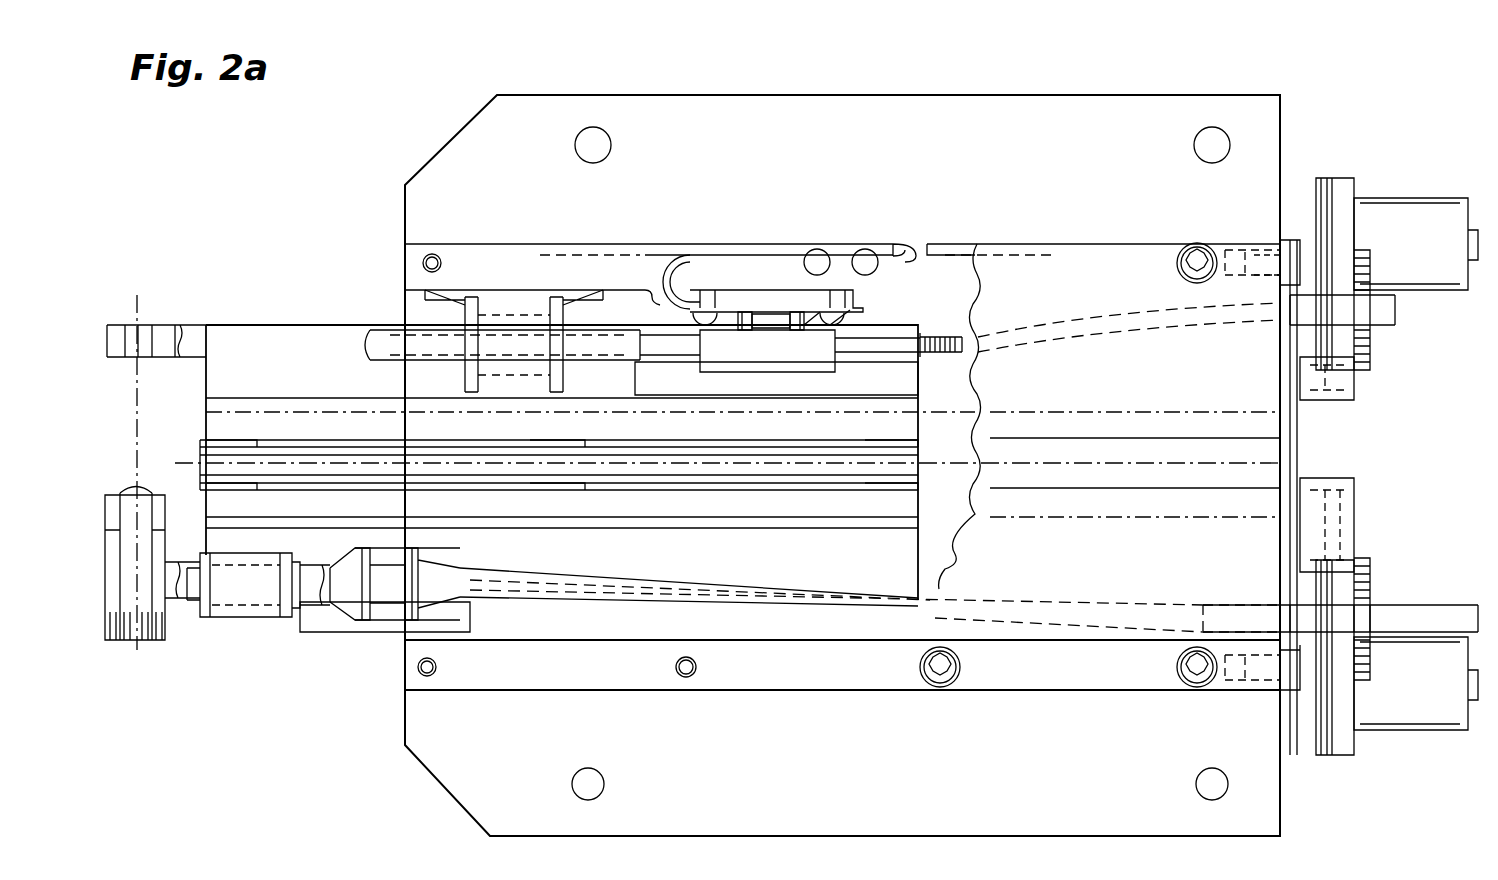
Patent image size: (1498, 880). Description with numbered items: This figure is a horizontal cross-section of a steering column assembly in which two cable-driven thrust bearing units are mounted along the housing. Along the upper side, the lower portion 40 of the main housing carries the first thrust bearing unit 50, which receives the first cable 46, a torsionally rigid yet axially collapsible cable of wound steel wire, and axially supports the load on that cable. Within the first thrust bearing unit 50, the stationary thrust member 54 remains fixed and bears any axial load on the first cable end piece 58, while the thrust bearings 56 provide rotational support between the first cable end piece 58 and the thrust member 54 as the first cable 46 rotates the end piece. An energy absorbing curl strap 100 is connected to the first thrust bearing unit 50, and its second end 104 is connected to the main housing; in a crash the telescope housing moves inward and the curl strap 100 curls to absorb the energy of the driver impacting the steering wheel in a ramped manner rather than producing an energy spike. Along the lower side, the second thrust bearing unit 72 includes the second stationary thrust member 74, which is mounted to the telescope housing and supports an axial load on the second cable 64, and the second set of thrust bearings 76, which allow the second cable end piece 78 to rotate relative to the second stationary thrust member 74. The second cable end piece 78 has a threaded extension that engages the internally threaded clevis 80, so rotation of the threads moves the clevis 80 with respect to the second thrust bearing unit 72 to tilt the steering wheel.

The lower portion of the main housing 40 is at (597, 248).
The first cable 46 is at (1110, 318).
The first thrust bearing unit 50 is at (738, 285).
The stationary thrust member 54 is at (790, 325).
The thrust bearings 56 is at (770, 320).
The first cable end piece 58 is at (745, 320).
The second cable 64 is at (1107, 625).
The second thrust bearing unit 72 is at (390, 660).
The second stationary thrust member 74 is at (382, 620).
The second set of thrust bearings 76 is at (360, 622).
The second cable end piece 78 is at (340, 615).
The clevis 80 is at (212, 617).
The curl strap 100 is at (683, 270).
The second end of the curl strap 104 is at (830, 305).